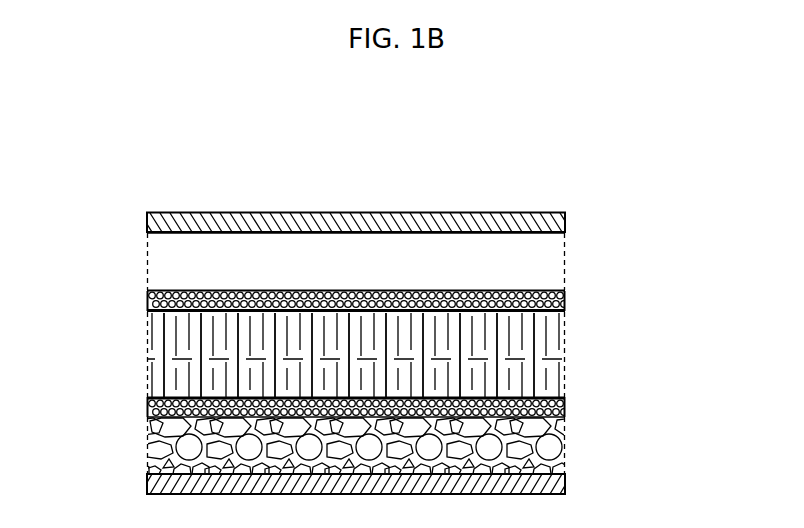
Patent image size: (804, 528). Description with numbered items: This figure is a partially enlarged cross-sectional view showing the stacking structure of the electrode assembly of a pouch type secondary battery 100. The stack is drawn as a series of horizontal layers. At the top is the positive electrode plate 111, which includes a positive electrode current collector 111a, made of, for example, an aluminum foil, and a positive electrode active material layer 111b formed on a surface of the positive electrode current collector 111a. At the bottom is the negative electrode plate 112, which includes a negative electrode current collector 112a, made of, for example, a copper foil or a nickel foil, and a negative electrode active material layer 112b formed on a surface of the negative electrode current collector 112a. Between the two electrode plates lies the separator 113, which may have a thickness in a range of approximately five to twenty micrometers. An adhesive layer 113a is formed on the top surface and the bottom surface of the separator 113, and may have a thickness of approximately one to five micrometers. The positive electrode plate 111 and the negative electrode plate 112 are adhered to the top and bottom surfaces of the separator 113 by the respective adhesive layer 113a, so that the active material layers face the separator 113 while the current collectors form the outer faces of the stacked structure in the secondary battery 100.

The secondary battery 100 is at (124, 181).
The positive electrode plate 111 is at (673, 212).
The positive electrode current collector 111a is at (566, 222).
The positive electrode active material layer 111b is at (566, 262).
The negative electrode plate 112 is at (673, 435).
The negative electrode current collector 112a is at (566, 485).
The negative electrode active material layer 112b is at (566, 445).
The separator 113 is at (566, 355).
The adhesive layer 113a is at (566, 300).